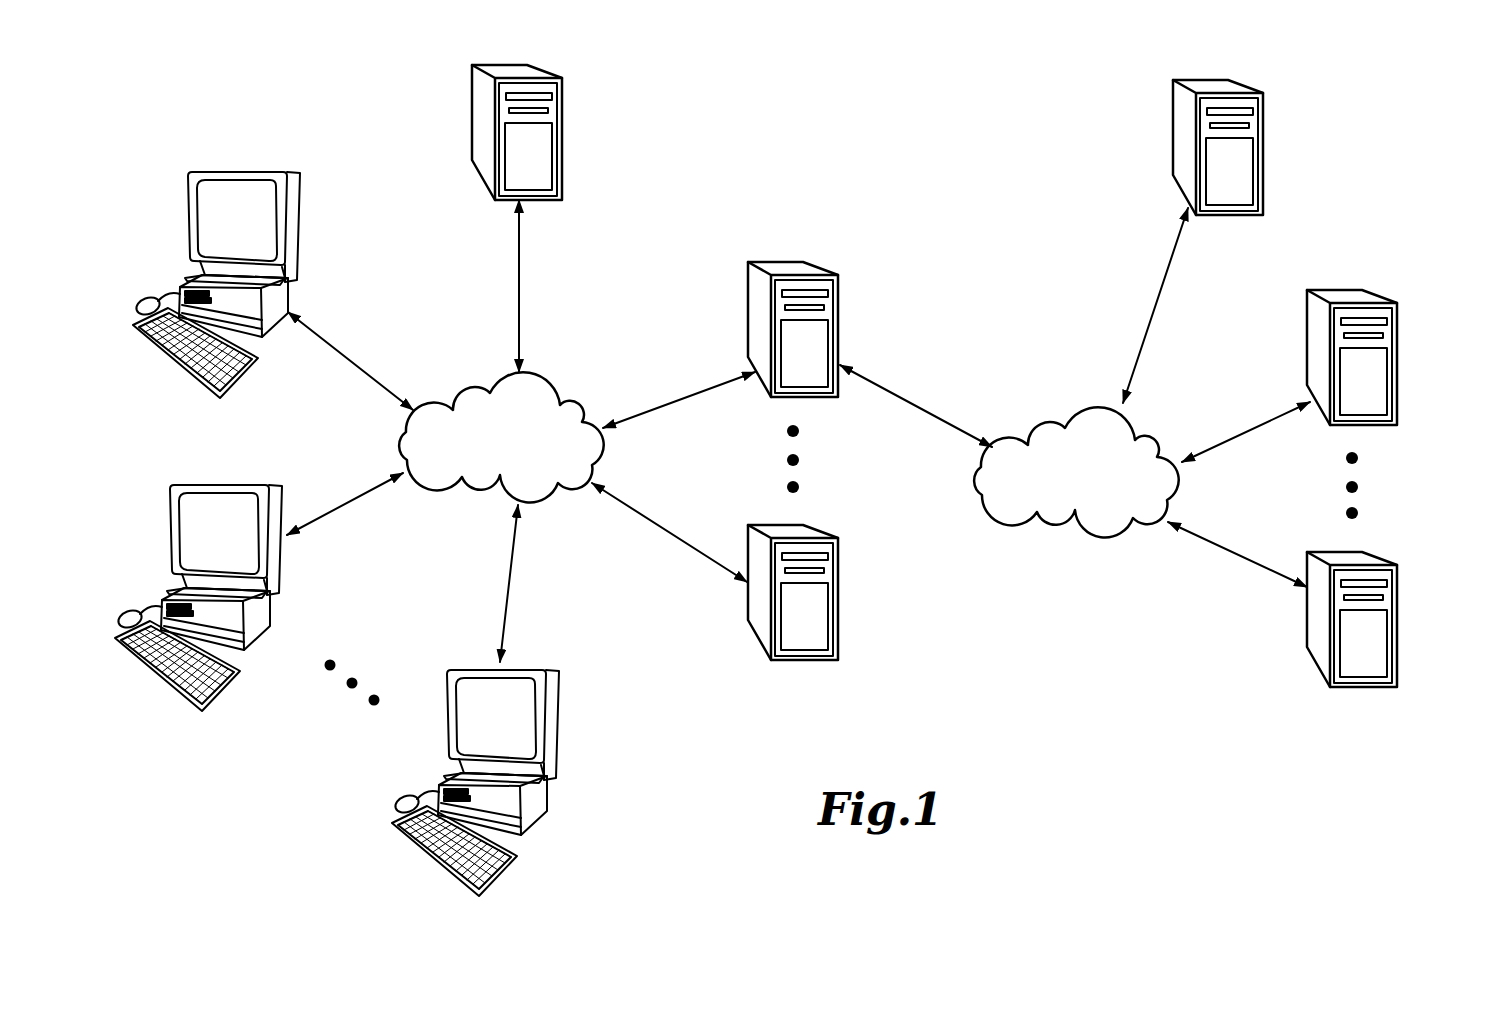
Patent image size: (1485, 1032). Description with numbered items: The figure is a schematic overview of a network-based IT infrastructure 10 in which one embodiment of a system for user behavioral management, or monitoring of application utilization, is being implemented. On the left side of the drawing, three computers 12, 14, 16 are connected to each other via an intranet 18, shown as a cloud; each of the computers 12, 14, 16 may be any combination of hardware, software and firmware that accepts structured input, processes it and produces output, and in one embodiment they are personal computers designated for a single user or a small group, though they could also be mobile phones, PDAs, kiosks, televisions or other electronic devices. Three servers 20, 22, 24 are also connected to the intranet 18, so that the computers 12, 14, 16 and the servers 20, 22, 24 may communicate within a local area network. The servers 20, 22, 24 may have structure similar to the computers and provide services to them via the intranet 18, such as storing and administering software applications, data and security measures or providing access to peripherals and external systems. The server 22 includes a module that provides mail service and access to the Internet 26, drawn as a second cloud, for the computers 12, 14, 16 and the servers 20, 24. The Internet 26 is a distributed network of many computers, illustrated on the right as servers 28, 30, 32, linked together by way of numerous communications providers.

The network-based IT infrastructure 10 is at (768, 170).
The computer 12 is at (300, 235).
The computer 14 is at (277, 577).
The computer 16 is at (557, 737).
The intranet 18 is at (495, 472).
The server 20 is at (550, 132).
The server 22 is at (827, 329).
The server 24 is at (827, 592).
The Internet 26 is at (1071, 504).
The server 28 is at (1251, 147).
The server 30 is at (1386, 357).
The server 32 is at (1386, 619).